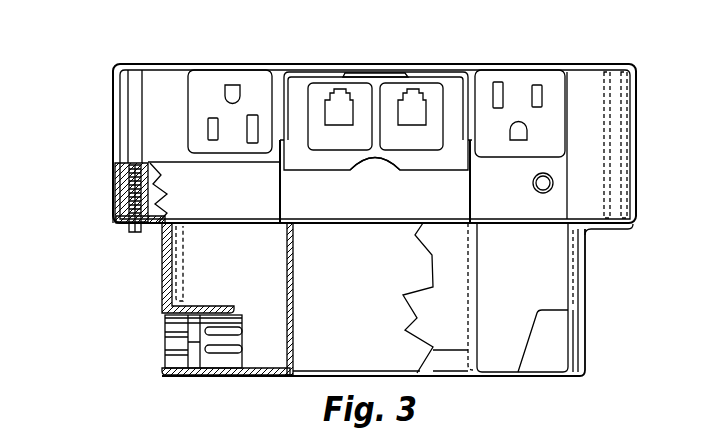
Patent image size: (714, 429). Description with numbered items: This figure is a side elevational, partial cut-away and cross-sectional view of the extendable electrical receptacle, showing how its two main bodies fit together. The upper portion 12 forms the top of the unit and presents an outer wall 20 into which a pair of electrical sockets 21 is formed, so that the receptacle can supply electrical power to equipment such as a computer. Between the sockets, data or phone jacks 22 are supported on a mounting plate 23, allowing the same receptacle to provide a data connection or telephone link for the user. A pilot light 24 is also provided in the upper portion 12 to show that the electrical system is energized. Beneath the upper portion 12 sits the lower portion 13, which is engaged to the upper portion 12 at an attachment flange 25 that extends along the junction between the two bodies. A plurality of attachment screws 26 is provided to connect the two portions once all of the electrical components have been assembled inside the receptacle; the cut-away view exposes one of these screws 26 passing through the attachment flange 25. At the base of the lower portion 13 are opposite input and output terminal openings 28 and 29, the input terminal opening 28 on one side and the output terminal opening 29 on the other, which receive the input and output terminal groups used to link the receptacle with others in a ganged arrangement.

The upper portion 12 is at (632, 112).
The lower portion 13 is at (580, 277).
The outer wall 20 is at (379, 213).
The electrical sockets 21 is at (255, 92).
The data or phone jacks 22 is at (340, 103).
The mounting plate 23 is at (432, 160).
The pilot light 24 is at (553, 196).
The attachment flange 25 is at (115, 231).
The attachment screws 26 is at (130, 230).
The input terminal opening 28 is at (175, 328).
The output terminal opening 29 is at (578, 342).